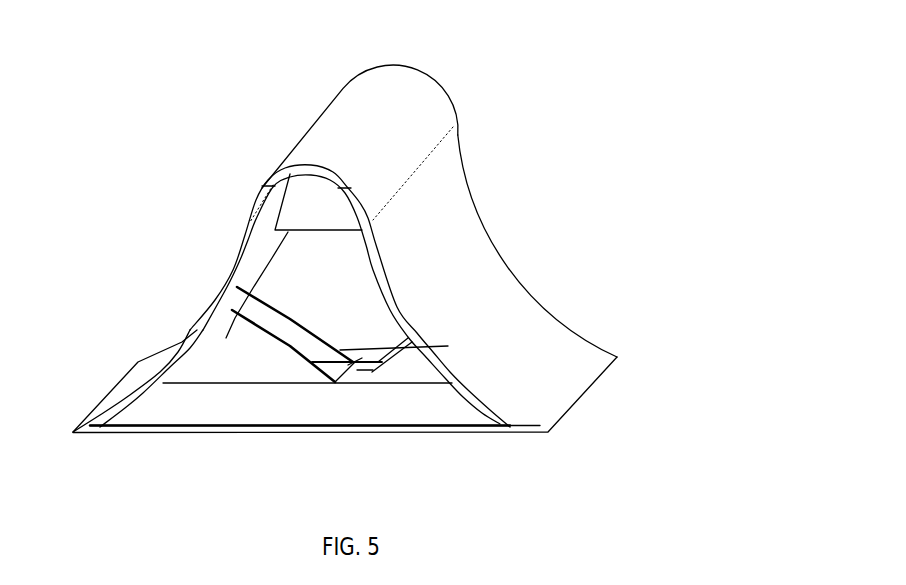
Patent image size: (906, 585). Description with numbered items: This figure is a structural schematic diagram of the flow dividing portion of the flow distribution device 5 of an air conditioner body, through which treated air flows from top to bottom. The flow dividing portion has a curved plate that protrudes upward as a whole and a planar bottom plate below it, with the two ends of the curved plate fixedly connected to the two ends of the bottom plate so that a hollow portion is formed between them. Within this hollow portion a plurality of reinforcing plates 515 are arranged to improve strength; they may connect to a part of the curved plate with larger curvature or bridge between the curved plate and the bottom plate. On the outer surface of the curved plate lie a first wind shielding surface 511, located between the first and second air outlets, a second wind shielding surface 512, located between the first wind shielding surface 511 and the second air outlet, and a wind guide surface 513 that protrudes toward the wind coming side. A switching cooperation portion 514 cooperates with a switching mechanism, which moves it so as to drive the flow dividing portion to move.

The fixing seat 5 is at (280, 143).
The first wind shielding surface 511 is at (438, 243).
The second wind shielding surface 512 is at (182, 342).
The wind guide surface 513 is at (433, 103).
The switching cooperation portion 514 is at (355, 374).
The reinforcing plates 515 is at (410, 363).